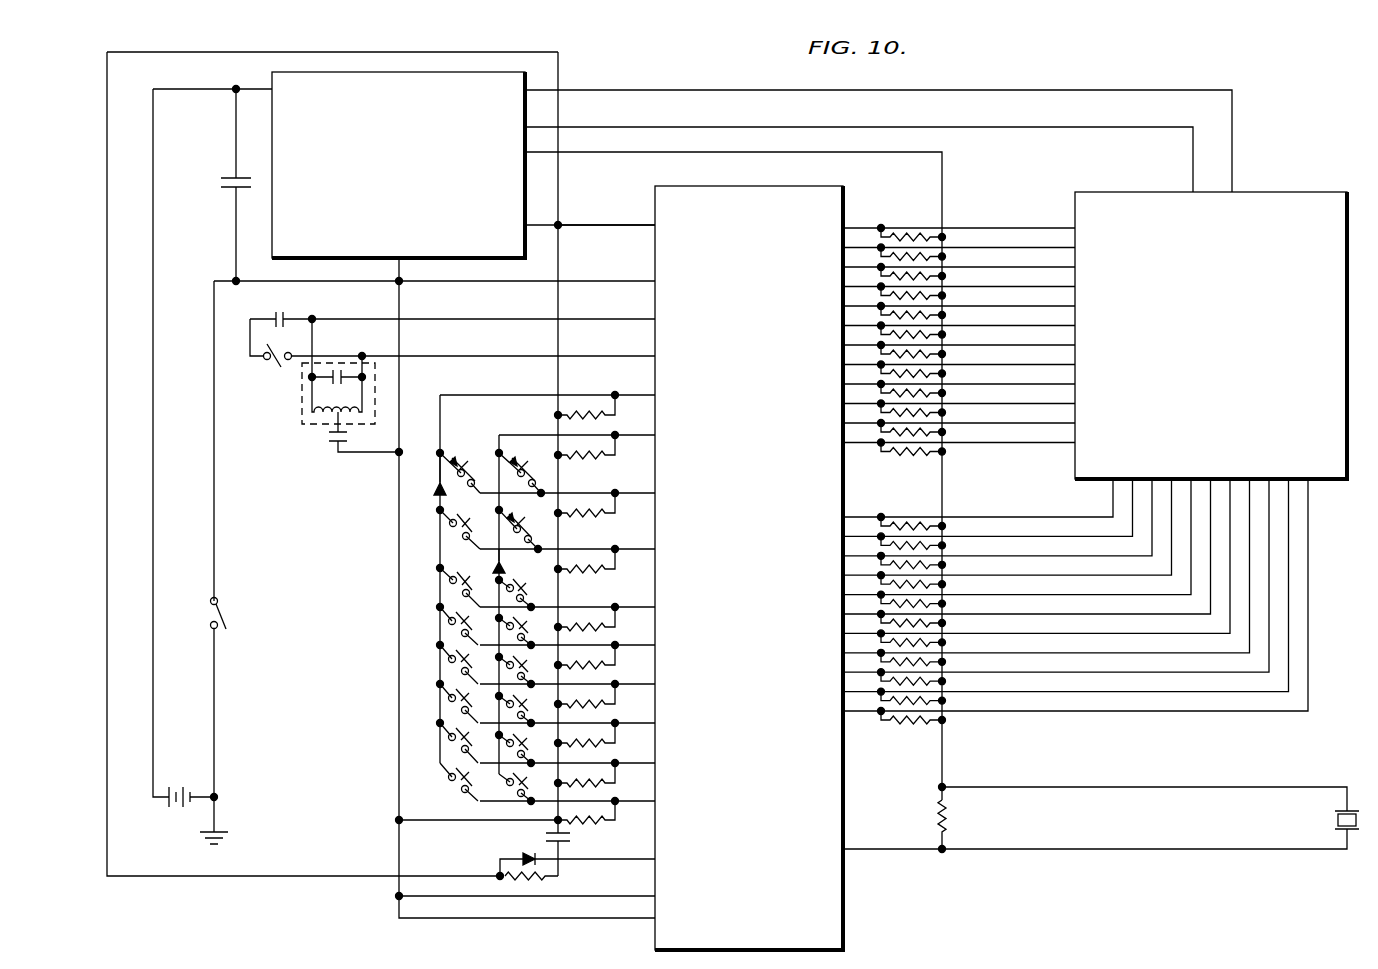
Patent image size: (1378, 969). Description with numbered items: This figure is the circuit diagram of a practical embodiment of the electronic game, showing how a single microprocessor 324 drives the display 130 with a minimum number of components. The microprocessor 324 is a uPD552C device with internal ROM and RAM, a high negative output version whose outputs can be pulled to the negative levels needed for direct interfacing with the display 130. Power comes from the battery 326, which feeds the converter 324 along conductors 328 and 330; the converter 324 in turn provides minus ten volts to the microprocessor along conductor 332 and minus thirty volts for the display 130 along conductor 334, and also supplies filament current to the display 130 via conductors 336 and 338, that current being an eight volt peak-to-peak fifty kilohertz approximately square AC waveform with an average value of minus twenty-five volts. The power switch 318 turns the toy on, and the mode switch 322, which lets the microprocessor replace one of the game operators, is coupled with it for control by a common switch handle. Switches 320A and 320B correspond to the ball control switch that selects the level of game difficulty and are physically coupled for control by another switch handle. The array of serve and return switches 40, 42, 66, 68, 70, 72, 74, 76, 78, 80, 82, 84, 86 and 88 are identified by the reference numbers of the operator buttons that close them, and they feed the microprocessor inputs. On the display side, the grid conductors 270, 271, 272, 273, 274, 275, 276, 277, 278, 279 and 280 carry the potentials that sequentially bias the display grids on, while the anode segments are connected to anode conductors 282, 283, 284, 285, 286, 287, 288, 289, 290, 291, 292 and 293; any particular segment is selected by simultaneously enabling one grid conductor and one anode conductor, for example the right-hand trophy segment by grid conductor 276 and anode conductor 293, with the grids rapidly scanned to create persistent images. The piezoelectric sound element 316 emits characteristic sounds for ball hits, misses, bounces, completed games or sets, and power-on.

The display 130 is at (1285, 192).
The sound element 316 is at (1333, 821).
The power switch 318 is at (229, 613).
The switch 320A is at (445, 382).
The switch 320B is at (468, 468).
The mode switch 322 is at (468, 521).
The microprocessor 324 is at (270, 77).
The battery 326 is at (187, 804).
The conductor 328 is at (156, 229).
The conductor 330 is at (216, 502).
The conductor 332 is at (583, 225).
The conductor 334 is at (943, 161).
The conductor 336 is at (1193, 131).
The conductor 338 is at (1234, 107).
The serve and return switch 40 is at (545, 520).
The serve and return switch 42 is at (542, 474).
The serve and return switch 66 is at (542, 579).
The serve and return switch 68 is at (522, 617).
The serve and return switch 70 is at (522, 656).
The serve and return switch 72 is at (522, 695).
The serve and return switch 74 is at (522, 734).
The serve and return switch 76 is at (522, 773).
The serve and return switch 78 is at (470, 574).
The serve and return switch 80 is at (461, 611).
The serve and return switch 82 is at (461, 650).
The serve and return switch 84 is at (461, 689).
The serve and return switch 86 is at (461, 728).
The serve and return switch 88 is at (458, 769).
The grid conductor 270 is at (1054, 514).
The grid conductor 271 is at (1054, 533).
The grid conductor 272 is at (1054, 553).
The grid conductor 273 is at (1054, 572).
The grid conductor 274 is at (1054, 592).
The grid conductor 275 is at (1054, 611).
The grid conductor 276 is at (1054, 630).
The grid conductor 277 is at (1054, 650).
The grid conductor 278 is at (1054, 669).
The grid conductor 279 is at (1054, 689).
The grid conductor 280 is at (1054, 708).
The anode conductor 282 is at (1036, 225).
The anode conductor 283 is at (1036, 244).
The anode conductor 284 is at (1036, 264).
The anode conductor 285 is at (1036, 284).
The anode conductor 286 is at (1036, 303).
The anode conductor 287 is at (1036, 322).
The anode conductor 288 is at (1036, 342).
The anode conductor 289 is at (1036, 362).
The anode conductor 290 is at (1036, 381).
The anode conductor 291 is at (1036, 400).
The anode conductor 292 is at (1036, 420).
The anode conductor 293 is at (1036, 440).